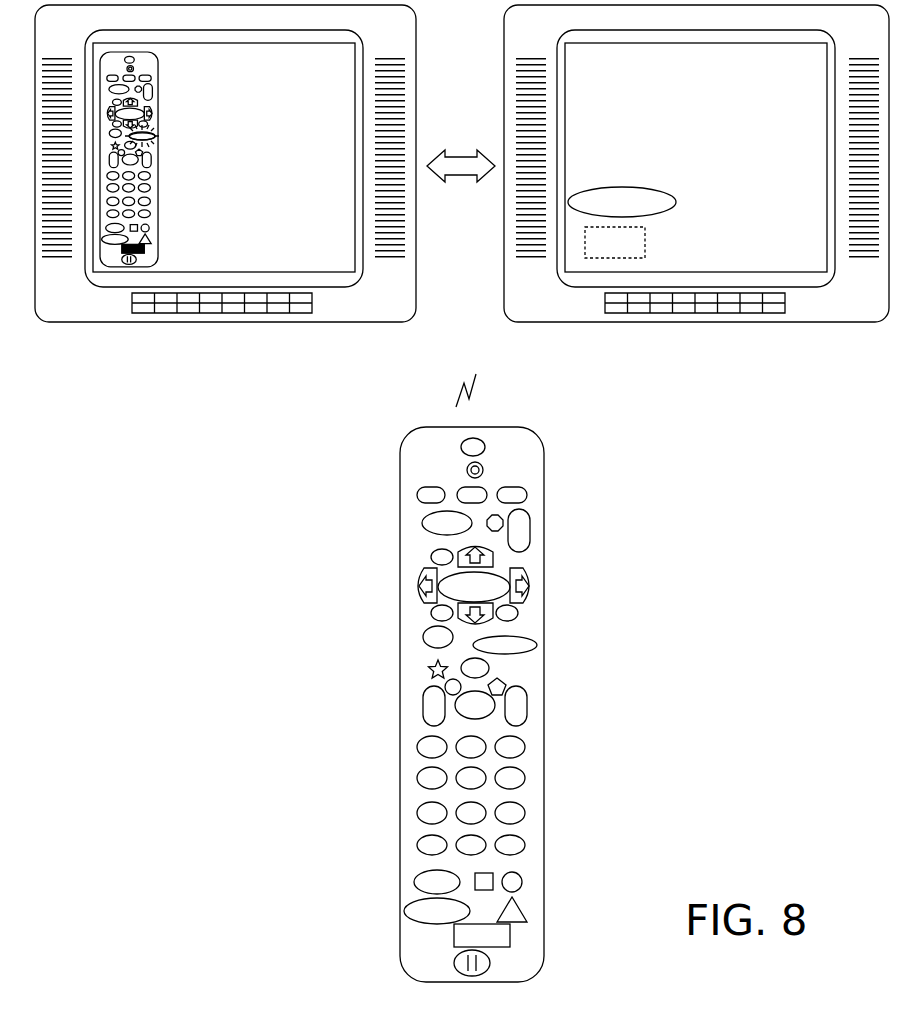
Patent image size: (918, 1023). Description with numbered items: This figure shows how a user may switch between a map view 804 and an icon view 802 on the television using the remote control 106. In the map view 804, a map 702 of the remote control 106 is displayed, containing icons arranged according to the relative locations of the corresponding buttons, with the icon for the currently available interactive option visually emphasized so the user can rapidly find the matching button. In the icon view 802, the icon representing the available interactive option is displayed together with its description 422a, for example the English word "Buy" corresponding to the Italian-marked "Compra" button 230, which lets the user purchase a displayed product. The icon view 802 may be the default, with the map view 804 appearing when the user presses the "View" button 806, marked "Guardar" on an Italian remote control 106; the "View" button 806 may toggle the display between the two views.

The map 702 is at (158, 162).
The description 422a is at (613, 259).
The map view 804 is at (229, 355).
The icon view 802 is at (698, 355).
The remote control 106 is at (457, 704).
The Compra button 230 is at (513, 637).
The View button 806 is at (404, 910).